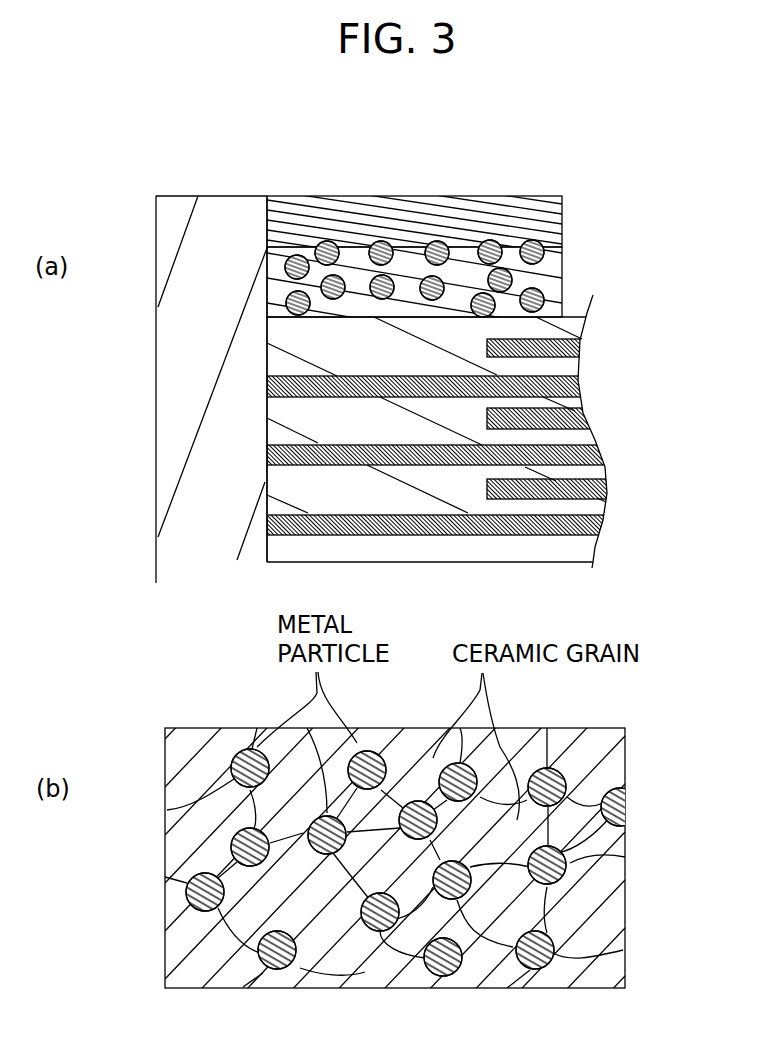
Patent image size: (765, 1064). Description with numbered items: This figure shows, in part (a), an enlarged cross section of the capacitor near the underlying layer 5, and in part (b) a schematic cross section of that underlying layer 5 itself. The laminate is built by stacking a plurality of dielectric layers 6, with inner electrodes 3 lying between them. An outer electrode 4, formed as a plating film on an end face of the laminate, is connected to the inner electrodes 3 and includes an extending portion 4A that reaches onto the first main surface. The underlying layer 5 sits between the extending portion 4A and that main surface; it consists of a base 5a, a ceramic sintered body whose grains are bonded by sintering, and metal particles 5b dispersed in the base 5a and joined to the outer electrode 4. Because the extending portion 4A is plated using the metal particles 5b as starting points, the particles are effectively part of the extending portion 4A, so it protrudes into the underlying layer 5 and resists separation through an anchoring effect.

The inner electrodes 3 is at (462, 533).
The outer electrodes 4 is at (221, 207).
The extending portion 4A is at (344, 205).
The underlying layer 5 is at (425, 138).
The base 5a is at (470, 256).
The metal particles 5b is at (438, 247).
The dielectric layers 6 is at (388, 507).